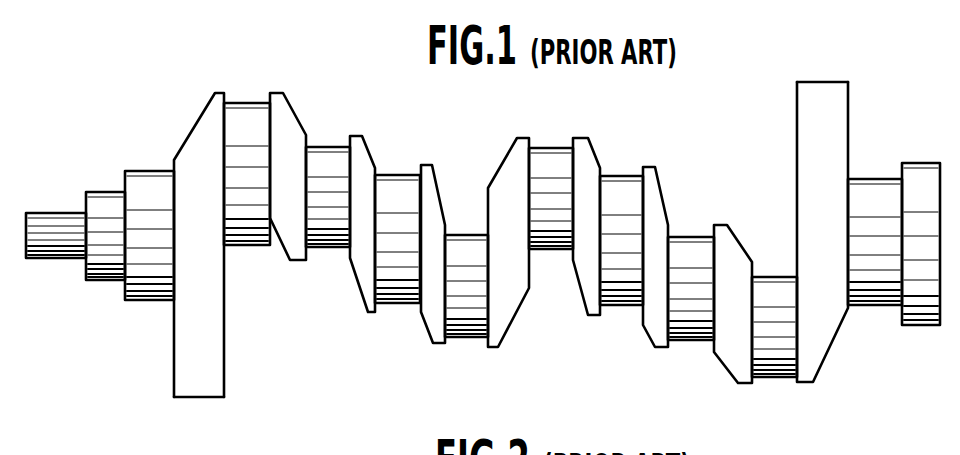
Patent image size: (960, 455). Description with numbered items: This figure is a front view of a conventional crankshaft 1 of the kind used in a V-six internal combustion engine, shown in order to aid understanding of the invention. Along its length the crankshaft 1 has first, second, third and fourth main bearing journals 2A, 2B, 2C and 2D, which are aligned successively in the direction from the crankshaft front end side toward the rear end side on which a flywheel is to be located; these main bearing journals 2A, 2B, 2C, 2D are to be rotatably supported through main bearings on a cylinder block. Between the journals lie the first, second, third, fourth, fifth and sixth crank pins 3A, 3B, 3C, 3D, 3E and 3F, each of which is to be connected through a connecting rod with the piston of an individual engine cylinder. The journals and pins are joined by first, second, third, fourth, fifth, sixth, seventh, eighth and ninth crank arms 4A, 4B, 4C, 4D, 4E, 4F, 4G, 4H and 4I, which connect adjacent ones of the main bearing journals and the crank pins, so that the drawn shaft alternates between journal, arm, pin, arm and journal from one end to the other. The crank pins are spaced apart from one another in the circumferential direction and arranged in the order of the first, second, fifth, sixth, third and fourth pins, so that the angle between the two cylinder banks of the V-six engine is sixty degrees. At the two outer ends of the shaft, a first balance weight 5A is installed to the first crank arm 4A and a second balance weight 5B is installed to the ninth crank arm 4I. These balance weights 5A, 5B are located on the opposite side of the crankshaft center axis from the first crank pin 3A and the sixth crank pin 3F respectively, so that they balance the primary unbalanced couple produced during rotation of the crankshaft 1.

The crankshaft 1 is at (483, 246).
The first main bearing journal 2A is at (149, 214).
The second main bearing journal 2B is at (397, 216).
The third main bearing journal 2C is at (621, 219).
The fourth main bearing journal 2D is at (875, 219).
The first crank pin 3A is at (247, 152).
The second crank pin 3B is at (328, 177).
The third crank pin 3C is at (466, 265).
The fourth crank pin 3D is at (551, 178).
The fifth crank pin 3E is at (691, 267).
The sixth crank pin 3F is at (774, 305).
The first crank arm 4A is at (225, 245).
The second crank arm 4B is at (288, 200).
The third crank arm 4C is at (358, 249).
The fourth crank arm 4D is at (434, 276).
The fifth crank arm 4E is at (520, 250).
The sixth crank arm 4F is at (592, 250).
The seventh crank arm 4G is at (658, 284).
The eighth crank arm 4H is at (733, 328).
The ninth crank arm 4I is at (831, 236).
The first balance weight 5A is at (199, 424).
The second balance weight 5B is at (822, 61).